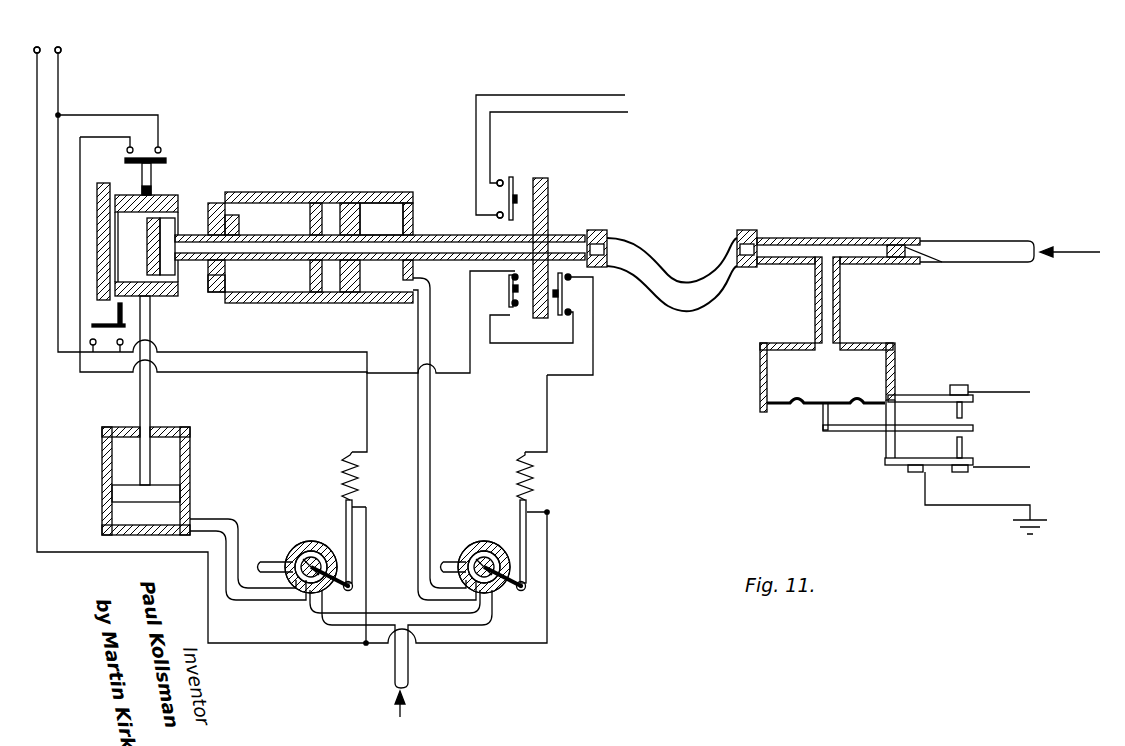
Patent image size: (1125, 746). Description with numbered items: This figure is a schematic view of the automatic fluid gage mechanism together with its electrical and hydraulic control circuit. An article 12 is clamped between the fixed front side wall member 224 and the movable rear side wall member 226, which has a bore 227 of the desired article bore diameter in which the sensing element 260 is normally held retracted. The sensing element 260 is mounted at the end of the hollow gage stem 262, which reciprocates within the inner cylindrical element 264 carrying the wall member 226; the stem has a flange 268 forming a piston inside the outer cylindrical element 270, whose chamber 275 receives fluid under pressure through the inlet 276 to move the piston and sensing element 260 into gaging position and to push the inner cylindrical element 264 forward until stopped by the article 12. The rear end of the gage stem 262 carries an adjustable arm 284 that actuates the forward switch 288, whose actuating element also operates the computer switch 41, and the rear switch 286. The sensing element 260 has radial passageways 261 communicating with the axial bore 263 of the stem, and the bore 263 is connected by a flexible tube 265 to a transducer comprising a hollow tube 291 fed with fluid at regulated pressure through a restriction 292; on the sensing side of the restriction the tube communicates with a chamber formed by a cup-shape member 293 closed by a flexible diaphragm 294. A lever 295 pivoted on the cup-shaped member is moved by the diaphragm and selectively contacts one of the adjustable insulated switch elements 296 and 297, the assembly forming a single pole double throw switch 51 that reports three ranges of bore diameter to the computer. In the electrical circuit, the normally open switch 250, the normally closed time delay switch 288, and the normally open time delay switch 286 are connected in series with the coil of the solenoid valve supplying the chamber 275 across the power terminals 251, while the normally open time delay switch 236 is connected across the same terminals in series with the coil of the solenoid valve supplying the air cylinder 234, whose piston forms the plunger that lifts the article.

The terminals 251 is at (62, 47).
The normally open switch 250 is at (145, 160).
The front side wall member 224 is at (110, 182).
The article 12 is at (168, 196).
The radial passageways 261 is at (158, 241).
The time delay switch 236 is at (127, 325).
The axial bore 263 is at (433, 247).
The sensing element 260 is at (182, 228).
The bore 227 is at (212, 278).
The rear side wall member 226 is at (228, 212).
The inner cylindrical element 264 is at (284, 203).
The gage stem 262 is at (336, 232).
The flange 268 is at (356, 284).
The outer cylindrical element 270 is at (378, 193).
The chamber 275 is at (392, 222).
The arm 284 is at (550, 217).
The computer switch 41 is at (513, 192).
The forward switch 288 is at (510, 306).
The rear switch 286 is at (563, 302).
The flexible tube 265 is at (661, 262).
The hollow tube 291 is at (803, 238).
The restriction 292 is at (900, 242).
The cup-shape member 293 is at (760, 362).
The flexible diaphragm 294 is at (780, 408).
The lever 295 is at (858, 432).
The single pole double throw switch 51 is at (970, 426).
The adjustable insulated switch element 296 is at (965, 385).
The adjustable insulated switch element 297 is at (962, 473).
The air cylinder 234 is at (102, 470).
The inlet 276 is at (429, 452).